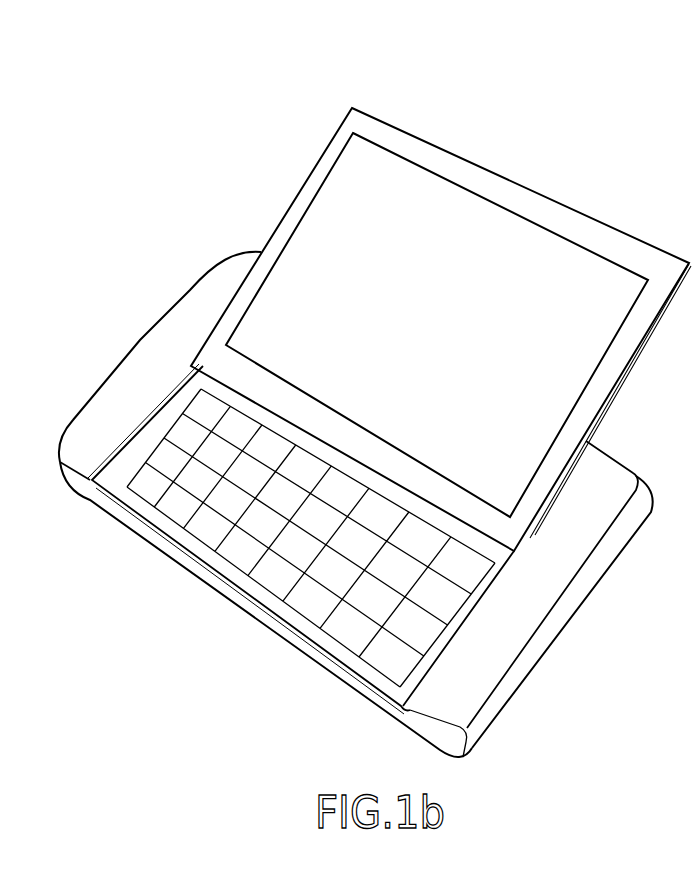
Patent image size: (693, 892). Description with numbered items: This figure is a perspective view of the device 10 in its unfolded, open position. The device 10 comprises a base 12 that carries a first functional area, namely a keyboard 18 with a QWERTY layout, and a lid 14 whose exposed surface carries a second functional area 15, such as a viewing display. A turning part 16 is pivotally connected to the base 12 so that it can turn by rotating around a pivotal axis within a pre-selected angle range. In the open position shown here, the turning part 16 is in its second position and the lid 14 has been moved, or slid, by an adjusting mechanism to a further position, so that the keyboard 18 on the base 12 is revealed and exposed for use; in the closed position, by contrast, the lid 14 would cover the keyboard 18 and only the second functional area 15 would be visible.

The device 10 is at (272, 138).
The base 12 is at (135, 370).
The lid 14 is at (515, 200).
The second functional area 15 is at (445, 233).
The turning part 16 is at (475, 653).
The keyboard 18 is at (117, 490).